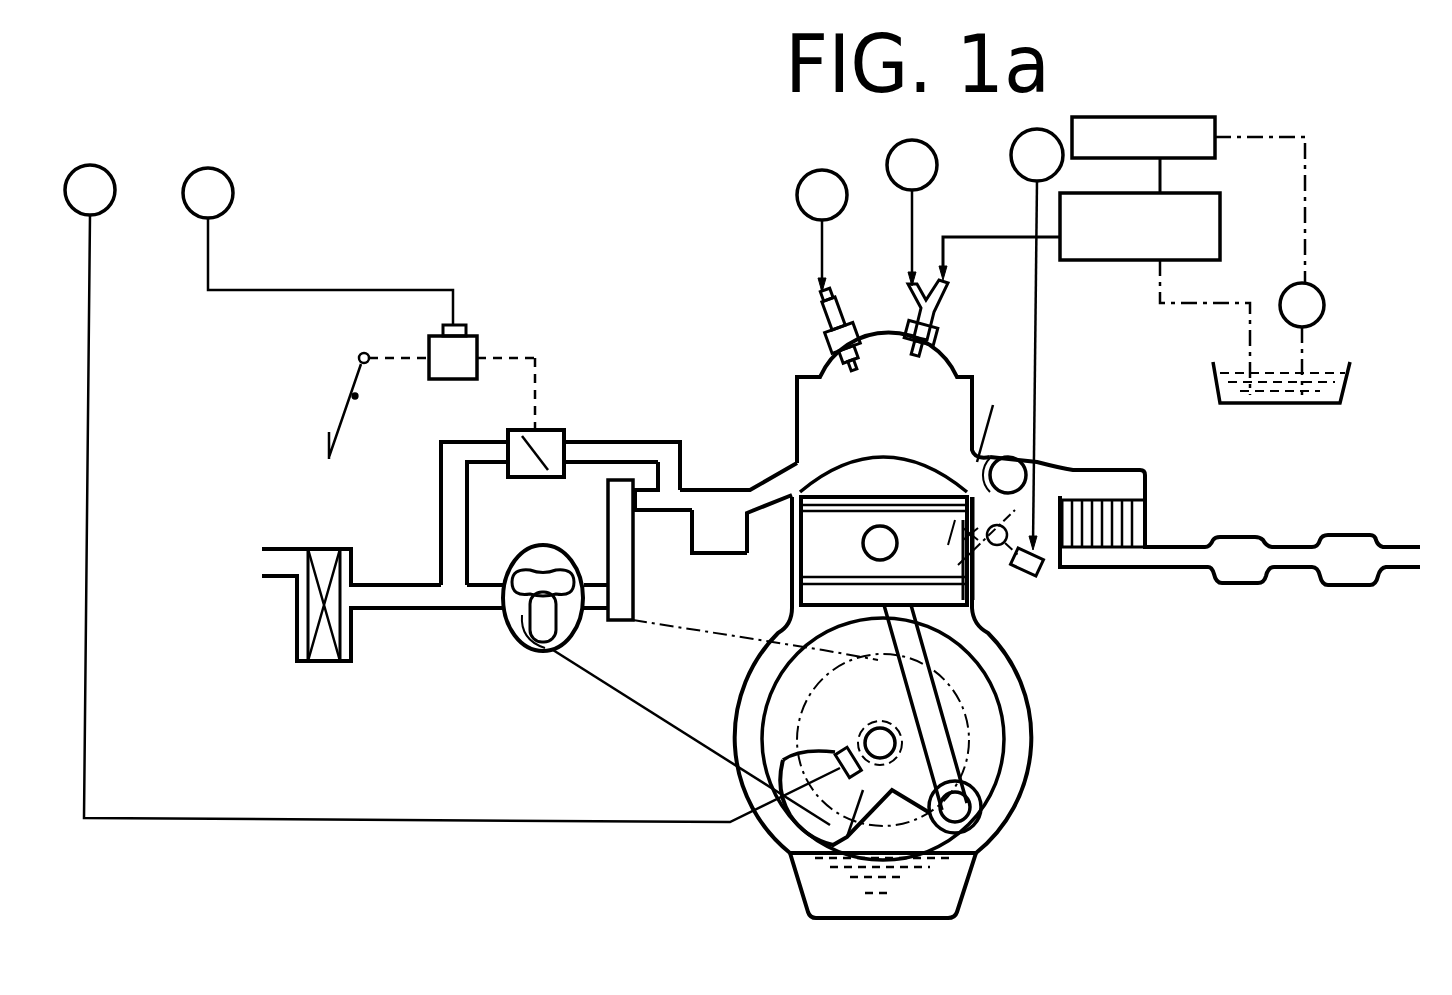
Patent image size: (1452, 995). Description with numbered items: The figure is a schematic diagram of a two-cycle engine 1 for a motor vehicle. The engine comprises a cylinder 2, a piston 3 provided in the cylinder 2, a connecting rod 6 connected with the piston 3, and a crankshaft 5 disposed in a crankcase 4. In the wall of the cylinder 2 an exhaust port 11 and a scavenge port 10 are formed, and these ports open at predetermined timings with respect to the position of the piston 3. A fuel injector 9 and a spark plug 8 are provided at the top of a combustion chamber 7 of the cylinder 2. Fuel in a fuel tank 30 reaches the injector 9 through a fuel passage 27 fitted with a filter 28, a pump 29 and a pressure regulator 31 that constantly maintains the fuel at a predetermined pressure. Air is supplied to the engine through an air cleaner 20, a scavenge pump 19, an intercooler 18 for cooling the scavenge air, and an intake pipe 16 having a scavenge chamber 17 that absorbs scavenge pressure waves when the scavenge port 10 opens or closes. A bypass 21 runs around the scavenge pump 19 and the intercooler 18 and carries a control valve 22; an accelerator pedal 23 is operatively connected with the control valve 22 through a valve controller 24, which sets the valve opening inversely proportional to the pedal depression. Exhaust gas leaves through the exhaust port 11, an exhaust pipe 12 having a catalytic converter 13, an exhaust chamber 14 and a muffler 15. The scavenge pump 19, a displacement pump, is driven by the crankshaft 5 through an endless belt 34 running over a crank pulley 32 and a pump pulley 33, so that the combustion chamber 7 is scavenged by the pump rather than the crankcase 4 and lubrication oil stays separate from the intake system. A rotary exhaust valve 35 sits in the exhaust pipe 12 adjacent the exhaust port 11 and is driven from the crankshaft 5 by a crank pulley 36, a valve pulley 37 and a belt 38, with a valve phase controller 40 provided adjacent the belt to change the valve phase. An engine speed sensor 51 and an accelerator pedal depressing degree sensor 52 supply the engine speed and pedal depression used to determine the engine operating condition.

The two-cycle engine 1 is at (1040, 704).
The cylinder 2 is at (820, 410).
The piston 3 is at (808, 540).
The crankcase 4 is at (745, 687).
The crankshaft 5 is at (880, 728).
The connecting rod 6 is at (948, 770).
The combustion chamber 7 is at (836, 370).
The spark plug 8 is at (820, 304).
The fuel injector 9 is at (938, 305).
The scavenge port 10 is at (780, 478).
The exhaust port 11 is at (997, 417).
The exhaust pipe 12 is at (1160, 572).
The catalytic converter 13 is at (1140, 516).
The exhaust chamber 14 is at (1247, 586).
The muffler 15 is at (1348, 588).
The intake pipe 16 is at (657, 513).
The scavenge chamber 17 is at (705, 556).
The intercooler 18 is at (620, 622).
The scavenge pump 19 is at (500, 637).
The air cleaner 20 is at (345, 665).
The bypass 21 is at (612, 432).
The control valve 22 is at (540, 475).
The accelerator pedal 23 is at (325, 440).
The valve controller 24 is at (472, 336).
The fuel passage 27 is at (1003, 240).
The filter 28 is at (1215, 147).
The pump 29 is at (1325, 303).
The fuel tank 30 is at (1215, 390).
The pressure regulator 31 is at (1125, 265).
The crank pulley 32 is at (790, 787).
The pump pulley 33 is at (536, 642).
The endless belt 34 is at (668, 723).
The rotary exhaust valve 35 is at (1042, 463).
The crank pulley 36 is at (850, 811).
The valve pulley 37 is at (1040, 440).
The belt 38 is at (992, 655).
The valve phase controller 40 is at (1003, 575).
The engine speed sensor 51 is at (845, 750).
The accelerator pedal depressing degree sensor 52 is at (440, 329).